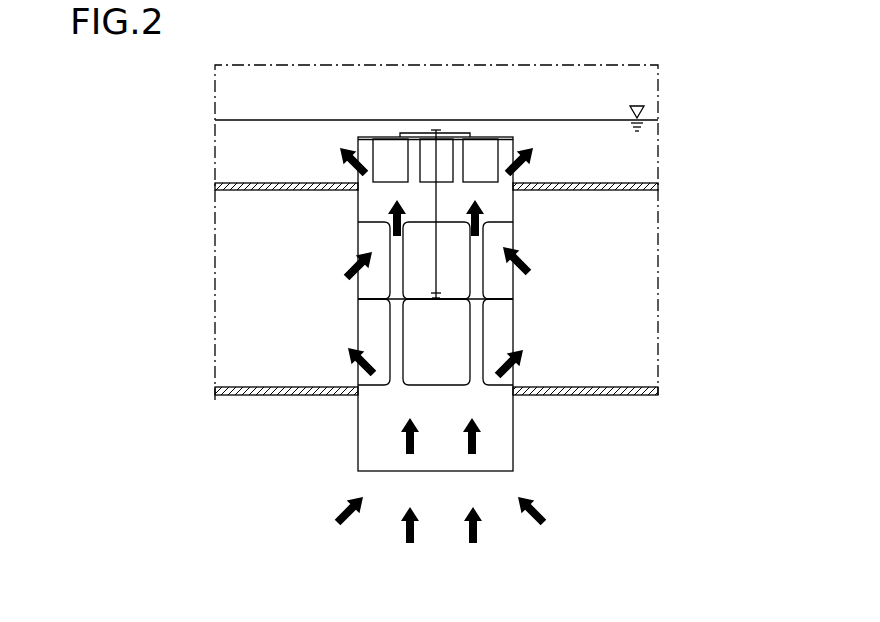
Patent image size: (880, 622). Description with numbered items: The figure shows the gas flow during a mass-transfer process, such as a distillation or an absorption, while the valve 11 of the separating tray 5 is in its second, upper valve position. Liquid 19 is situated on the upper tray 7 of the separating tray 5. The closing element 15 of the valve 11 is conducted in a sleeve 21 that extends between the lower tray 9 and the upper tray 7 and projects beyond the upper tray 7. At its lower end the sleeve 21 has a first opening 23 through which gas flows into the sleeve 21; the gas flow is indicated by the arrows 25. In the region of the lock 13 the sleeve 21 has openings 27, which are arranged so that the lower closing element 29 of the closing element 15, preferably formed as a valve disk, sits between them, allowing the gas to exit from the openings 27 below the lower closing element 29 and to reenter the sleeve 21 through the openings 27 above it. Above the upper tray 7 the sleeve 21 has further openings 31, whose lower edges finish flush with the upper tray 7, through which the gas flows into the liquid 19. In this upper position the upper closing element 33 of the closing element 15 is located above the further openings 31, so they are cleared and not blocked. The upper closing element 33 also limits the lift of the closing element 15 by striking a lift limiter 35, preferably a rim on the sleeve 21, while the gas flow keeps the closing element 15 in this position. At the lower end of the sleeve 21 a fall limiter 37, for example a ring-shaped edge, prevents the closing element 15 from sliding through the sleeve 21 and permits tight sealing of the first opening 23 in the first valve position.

The separating tray 5 is at (200, 226).
The upper tray 7 is at (265, 185).
The lower tray 9 is at (252, 396).
The valve 11 is at (530, 420).
The lock 13 is at (232, 270).
The closing element 15 is at (436, 192).
The liquid 19 is at (636, 153).
The sleeve 21 is at (357, 430).
The first opening 23 is at (430, 473).
The arrows 25 is at (535, 153).
The openings 27 is at (503, 334).
The lower closing element 29 is at (494, 299).
The further openings 31 is at (423, 155).
The upper closing element 33 is at (447, 133).
The lift limiter 35 is at (398, 133).
The fall limiter 37 is at (357, 473).